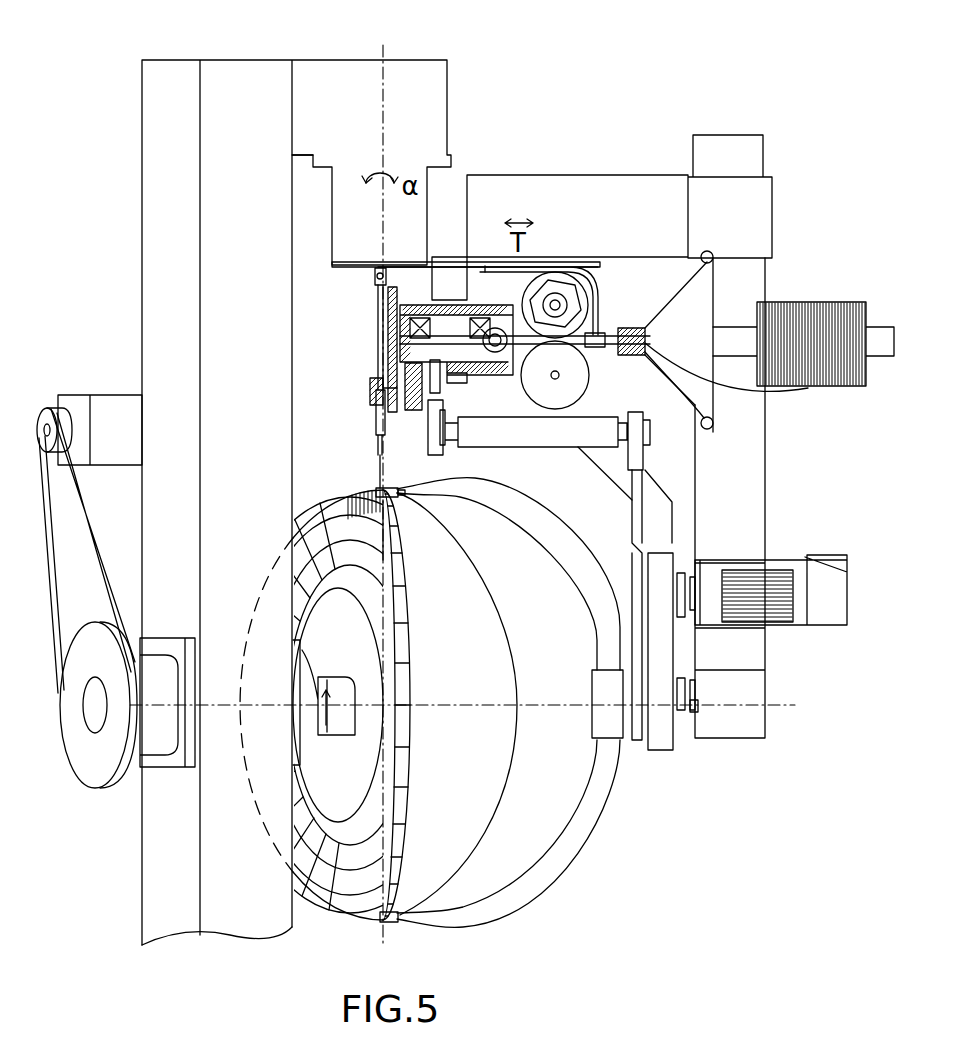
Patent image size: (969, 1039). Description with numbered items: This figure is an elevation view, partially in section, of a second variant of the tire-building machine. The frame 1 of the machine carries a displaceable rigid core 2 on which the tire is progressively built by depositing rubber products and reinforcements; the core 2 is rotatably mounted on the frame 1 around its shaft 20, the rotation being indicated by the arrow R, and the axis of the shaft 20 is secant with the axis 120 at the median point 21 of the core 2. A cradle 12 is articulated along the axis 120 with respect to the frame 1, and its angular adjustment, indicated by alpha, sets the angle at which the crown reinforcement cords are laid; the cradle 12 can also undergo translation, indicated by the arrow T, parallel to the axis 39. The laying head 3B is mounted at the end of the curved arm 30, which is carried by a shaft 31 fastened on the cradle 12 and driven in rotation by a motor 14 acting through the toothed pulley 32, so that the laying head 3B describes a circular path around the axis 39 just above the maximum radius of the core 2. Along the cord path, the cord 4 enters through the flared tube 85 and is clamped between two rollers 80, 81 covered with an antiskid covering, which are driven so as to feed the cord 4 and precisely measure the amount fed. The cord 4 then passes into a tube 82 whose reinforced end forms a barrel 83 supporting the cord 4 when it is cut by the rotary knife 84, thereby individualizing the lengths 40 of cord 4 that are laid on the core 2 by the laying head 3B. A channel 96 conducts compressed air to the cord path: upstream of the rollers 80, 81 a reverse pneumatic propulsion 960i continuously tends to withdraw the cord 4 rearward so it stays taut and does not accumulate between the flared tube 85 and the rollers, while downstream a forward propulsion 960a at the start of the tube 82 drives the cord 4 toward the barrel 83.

The frame 1 is at (142, 130).
The rigid core 2 is at (422, 862).
The laying head 3B is at (381, 478).
The cord 4 is at (808, 388).
The cradle 12 is at (541, 183).
The motor 14 is at (801, 566).
The shaft 20 is at (377, 702).
The median point 21 is at (340, 733).
The curved arm 30 is at (545, 530).
The shaft 31 is at (630, 720).
The toothed pulley 32 is at (705, 709).
The axis 39 is at (553, 710).
The length of cord 40 is at (390, 536).
The unwinding roller 80 is at (590, 322).
The unwinding roller 81 is at (590, 375).
The tube 82 is at (388, 343).
The barrel 83 is at (372, 390).
The rotary knife 84 is at (386, 408).
The flared tube 85 is at (712, 427).
The channel 96 is at (374, 278).
The axis 120 is at (395, 55).
The forward propulsion 960a is at (520, 365).
The reverse pneumatic propulsion 960i is at (618, 356).